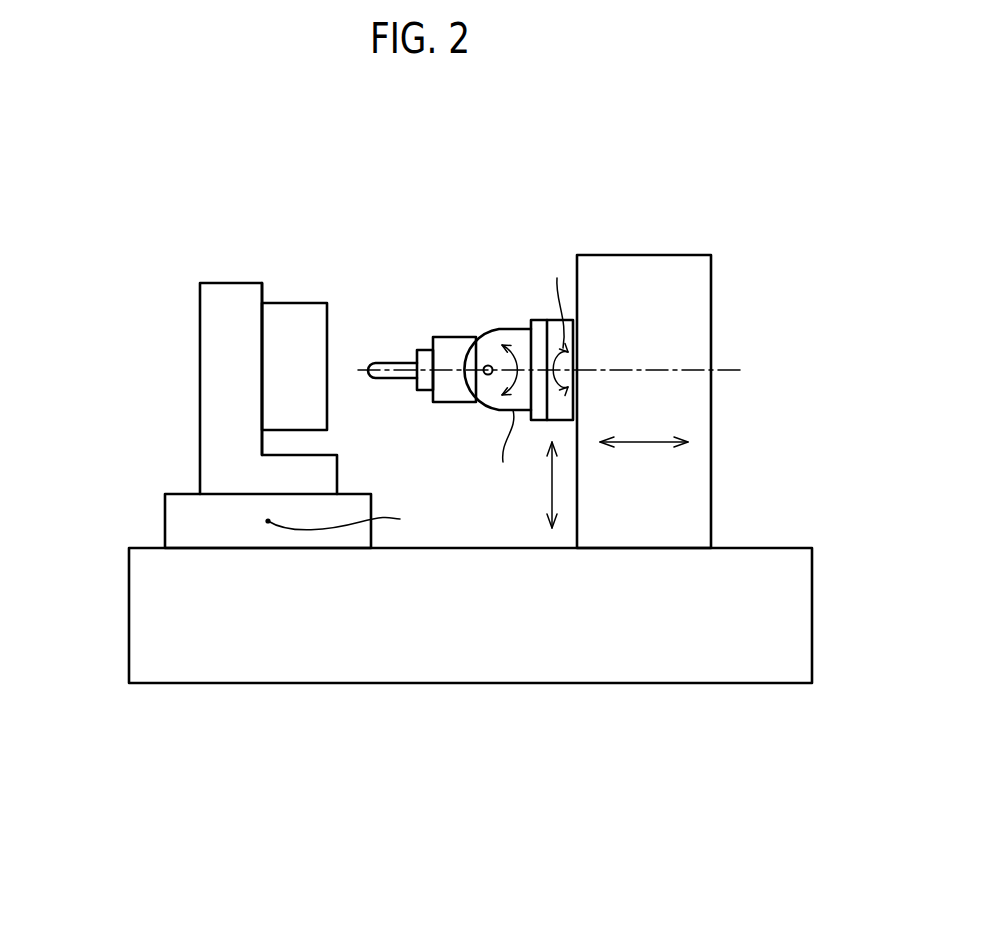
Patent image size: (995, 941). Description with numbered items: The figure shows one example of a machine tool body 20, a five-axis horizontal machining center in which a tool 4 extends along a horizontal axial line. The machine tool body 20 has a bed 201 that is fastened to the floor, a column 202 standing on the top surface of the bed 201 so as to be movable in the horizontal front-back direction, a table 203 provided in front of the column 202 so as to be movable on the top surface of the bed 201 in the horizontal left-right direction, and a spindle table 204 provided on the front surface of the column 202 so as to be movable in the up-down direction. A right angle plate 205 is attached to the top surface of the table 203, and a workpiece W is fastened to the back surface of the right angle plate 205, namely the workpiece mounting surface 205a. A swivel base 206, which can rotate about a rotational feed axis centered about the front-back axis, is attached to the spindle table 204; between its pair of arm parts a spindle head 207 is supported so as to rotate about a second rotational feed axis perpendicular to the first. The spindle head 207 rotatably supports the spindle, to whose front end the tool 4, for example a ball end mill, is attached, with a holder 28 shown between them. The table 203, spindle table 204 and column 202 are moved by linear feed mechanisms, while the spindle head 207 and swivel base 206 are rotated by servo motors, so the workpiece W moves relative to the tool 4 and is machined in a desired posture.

The machine tool body 20 is at (730, 222).
The bed 201 is at (258, 665).
The column 202 is at (711, 302).
The table 203 is at (175, 528).
The right angle plate 205 is at (215, 385).
The workpiece mounting surface 205a is at (262, 296).
The workpiece W is at (297, 315).
The tool 4 is at (380, 358).
The tool holder 28 is at (427, 388).
The spindle head 207 is at (445, 345).
The swivel base 206 is at (498, 337).
The spindle table 204 is at (552, 327).